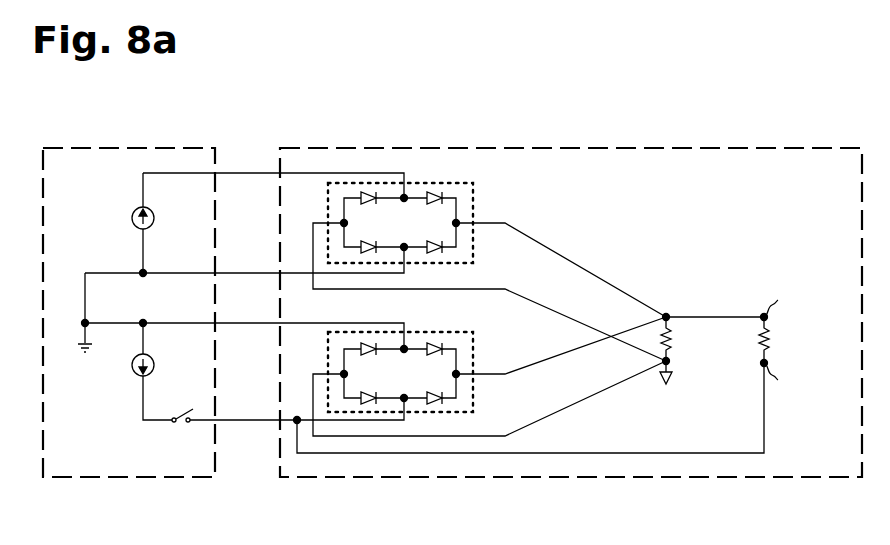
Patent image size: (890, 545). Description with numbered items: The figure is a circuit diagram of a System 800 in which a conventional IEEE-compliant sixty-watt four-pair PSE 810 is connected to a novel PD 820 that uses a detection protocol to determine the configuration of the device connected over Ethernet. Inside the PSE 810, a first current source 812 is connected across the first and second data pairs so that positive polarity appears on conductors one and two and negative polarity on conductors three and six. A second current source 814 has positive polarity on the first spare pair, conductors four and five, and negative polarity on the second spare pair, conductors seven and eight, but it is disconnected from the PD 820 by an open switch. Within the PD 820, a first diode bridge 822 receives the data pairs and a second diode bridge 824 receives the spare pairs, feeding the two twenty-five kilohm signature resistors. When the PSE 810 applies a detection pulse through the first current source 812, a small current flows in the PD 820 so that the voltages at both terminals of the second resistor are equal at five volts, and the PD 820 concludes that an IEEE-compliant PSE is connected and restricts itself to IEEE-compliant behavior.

The system 800 is at (657, 141).
The power sourcing equipment (PSE) 810 is at (213, 148).
The first current source 812 is at (132, 218).
The second current source 814 is at (154, 360).
The powered device (PD) 820 is at (440, 148).
The diode bridge 822 is at (473, 183).
The diode bridge 824 is at (473, 332).